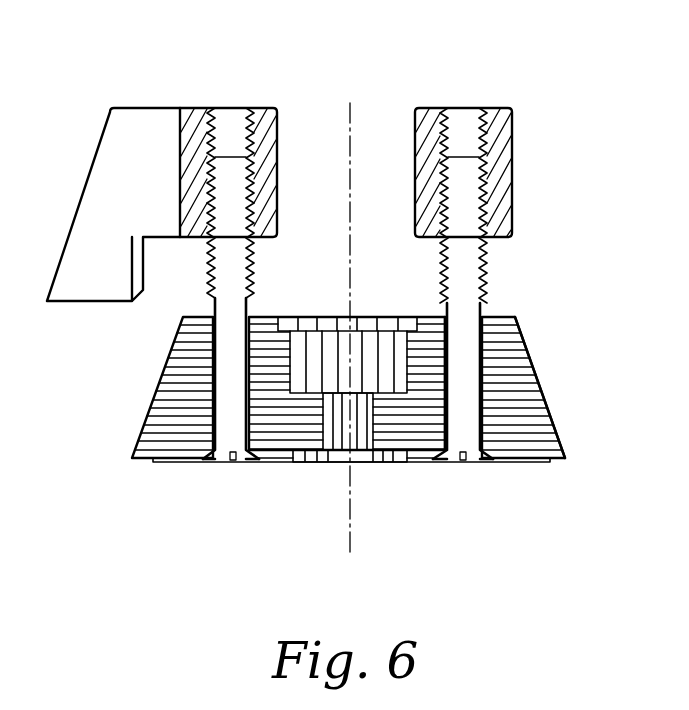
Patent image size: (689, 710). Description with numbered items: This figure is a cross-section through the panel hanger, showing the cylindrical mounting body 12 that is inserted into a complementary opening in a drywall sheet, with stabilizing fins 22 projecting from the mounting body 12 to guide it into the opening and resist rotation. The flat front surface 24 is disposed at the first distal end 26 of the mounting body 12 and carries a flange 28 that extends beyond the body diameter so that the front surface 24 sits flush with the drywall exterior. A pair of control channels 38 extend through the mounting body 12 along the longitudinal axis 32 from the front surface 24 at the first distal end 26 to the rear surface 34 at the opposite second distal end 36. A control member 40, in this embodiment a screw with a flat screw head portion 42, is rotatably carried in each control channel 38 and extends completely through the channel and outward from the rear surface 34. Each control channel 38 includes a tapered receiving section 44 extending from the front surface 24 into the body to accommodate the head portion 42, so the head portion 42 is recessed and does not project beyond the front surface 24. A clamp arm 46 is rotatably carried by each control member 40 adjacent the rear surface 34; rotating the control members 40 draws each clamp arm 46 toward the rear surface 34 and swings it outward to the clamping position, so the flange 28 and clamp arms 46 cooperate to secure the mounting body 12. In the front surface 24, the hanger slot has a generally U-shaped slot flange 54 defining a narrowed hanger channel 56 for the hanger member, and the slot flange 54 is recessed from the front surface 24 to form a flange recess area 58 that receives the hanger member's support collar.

The cylindrical mounting body 12 is at (355, 426).
The stabilizing fins 22 is at (557, 420).
The flat front surface 24 is at (420, 464).
The first distal end 26 is at (292, 462).
The flange 28 is at (546, 462).
The longitudinal axis 32 is at (350, 104).
The rear surface 34 is at (433, 315).
The second distal end 36 is at (280, 317).
The control channels 38 is at (210, 353).
The control member 40 is at (231, 420).
The flat screw head portion 42 is at (243, 463).
The tapered receiving section 44 is at (205, 452).
The clamp arm 46 is at (196, 108).
The U-shaped slot flange 54 is at (329, 428).
The narrowed hanger channel 56 is at (357, 440).
The flange recess area 58 is at (388, 462).